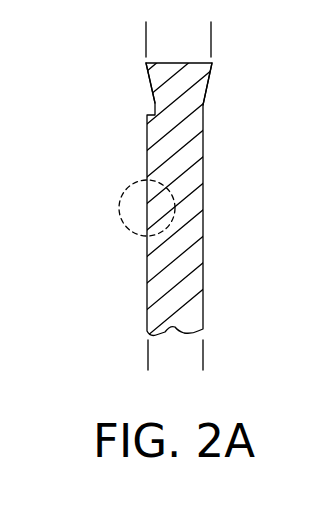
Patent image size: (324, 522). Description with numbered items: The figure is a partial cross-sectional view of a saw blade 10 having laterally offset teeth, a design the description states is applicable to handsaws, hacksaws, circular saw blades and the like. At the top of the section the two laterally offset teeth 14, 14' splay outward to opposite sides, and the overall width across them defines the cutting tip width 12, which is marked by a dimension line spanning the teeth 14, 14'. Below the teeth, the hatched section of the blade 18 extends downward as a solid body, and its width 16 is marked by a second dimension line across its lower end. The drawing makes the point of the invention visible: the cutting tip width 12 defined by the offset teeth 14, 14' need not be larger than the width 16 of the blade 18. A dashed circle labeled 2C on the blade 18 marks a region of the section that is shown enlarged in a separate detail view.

The saw blade 10 is at (104, 144).
The cutting tip width 12 is at (211, 33).
The laterally offset tooth 14 is at (108, 74).
The laterally offset tooth 14' is at (245, 78).
The width of the blade 16 is at (203, 362).
The blade 18 is at (204, 255).
The detail region of FIG. 2C is at (128, 228).